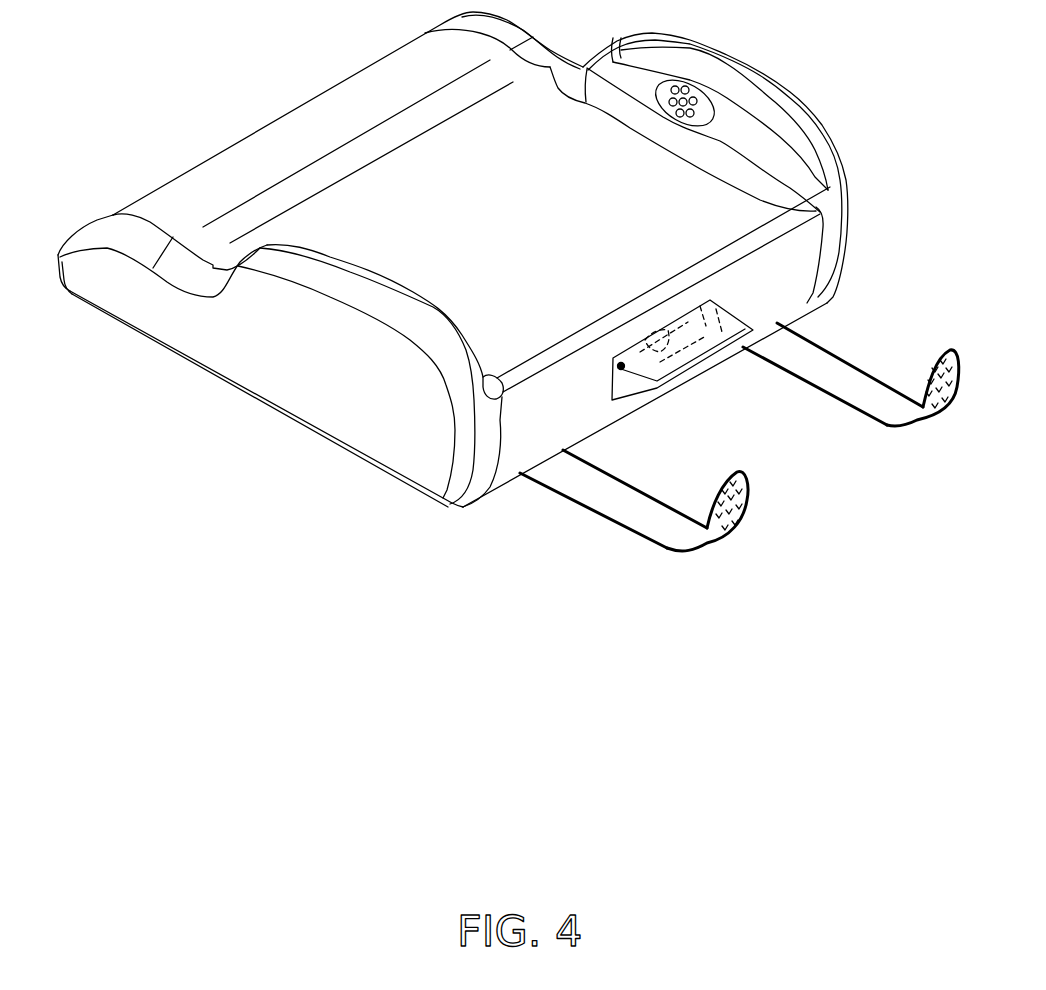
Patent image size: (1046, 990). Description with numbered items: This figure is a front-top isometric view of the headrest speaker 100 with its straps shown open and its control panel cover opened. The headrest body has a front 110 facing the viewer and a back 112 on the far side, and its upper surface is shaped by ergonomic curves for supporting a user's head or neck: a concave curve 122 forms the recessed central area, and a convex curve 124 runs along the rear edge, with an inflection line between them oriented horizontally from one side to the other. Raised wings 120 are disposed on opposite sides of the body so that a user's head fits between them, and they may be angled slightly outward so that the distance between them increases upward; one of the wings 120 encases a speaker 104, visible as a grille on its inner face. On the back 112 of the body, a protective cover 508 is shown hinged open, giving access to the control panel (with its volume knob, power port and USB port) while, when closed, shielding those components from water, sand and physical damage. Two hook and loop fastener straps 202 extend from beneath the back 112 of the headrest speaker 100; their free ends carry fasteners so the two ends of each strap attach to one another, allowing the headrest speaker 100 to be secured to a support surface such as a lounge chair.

The headrest speaker 100 is at (499, 306).
The front 110 is at (453, 256).
The back 112 is at (739, 465).
The raised wings 120 is at (327, 345).
The concave curve 122 is at (603, 208).
The convex curve 124 is at (398, 63).
The speakers 104 is at (679, 115).
The hook and loop fastener straps 202 is at (643, 513).
The protective cover 508 is at (665, 380).